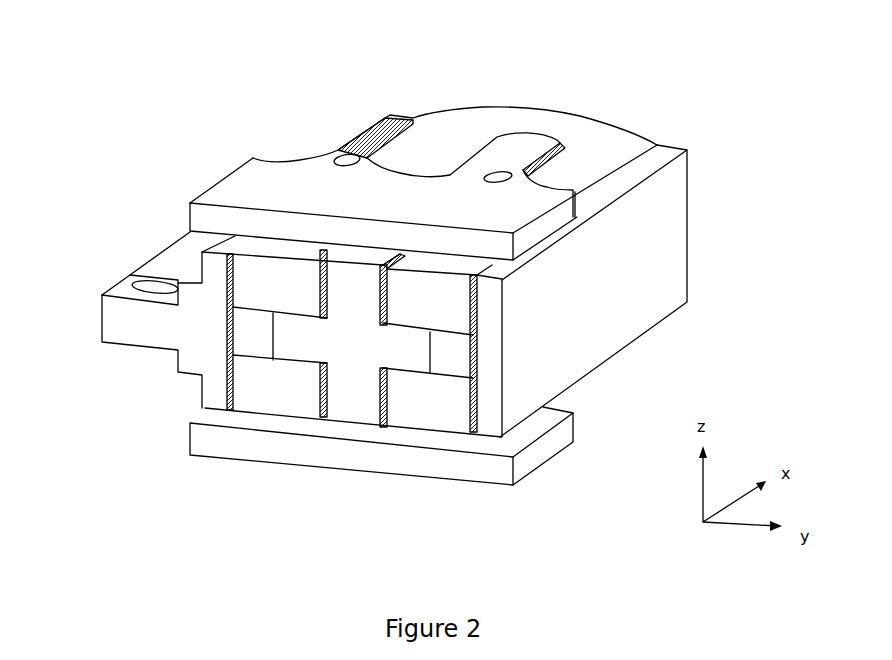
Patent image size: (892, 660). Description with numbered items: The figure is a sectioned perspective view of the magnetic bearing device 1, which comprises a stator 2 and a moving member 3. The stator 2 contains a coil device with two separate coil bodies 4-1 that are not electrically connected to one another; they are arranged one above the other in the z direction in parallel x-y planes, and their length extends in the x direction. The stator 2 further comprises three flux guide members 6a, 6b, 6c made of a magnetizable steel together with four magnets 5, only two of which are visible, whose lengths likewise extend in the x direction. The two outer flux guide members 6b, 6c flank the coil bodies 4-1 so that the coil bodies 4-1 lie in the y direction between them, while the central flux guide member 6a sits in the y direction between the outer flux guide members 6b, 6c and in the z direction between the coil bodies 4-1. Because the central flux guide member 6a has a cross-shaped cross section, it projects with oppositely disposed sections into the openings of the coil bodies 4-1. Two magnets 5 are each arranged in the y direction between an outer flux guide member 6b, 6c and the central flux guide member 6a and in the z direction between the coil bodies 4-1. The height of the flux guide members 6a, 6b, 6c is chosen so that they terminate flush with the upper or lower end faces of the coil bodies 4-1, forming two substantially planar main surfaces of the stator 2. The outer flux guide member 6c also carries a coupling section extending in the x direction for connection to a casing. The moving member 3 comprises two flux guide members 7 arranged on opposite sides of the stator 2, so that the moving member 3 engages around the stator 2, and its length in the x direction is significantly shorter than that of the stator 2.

The magnetic bearing device 1 is at (239, 86).
The stator 2 is at (709, 239).
The moving member 3 is at (508, 208).
The flux guide member 7 is at (550, 442).
The coil body 4-1 is at (462, 130).
The magnet 5 is at (433, 350).
The central flux guide member 6a is at (345, 332).
The outer flux guide member 6b is at (650, 200).
The outer flux guide member 6c is at (178, 332).